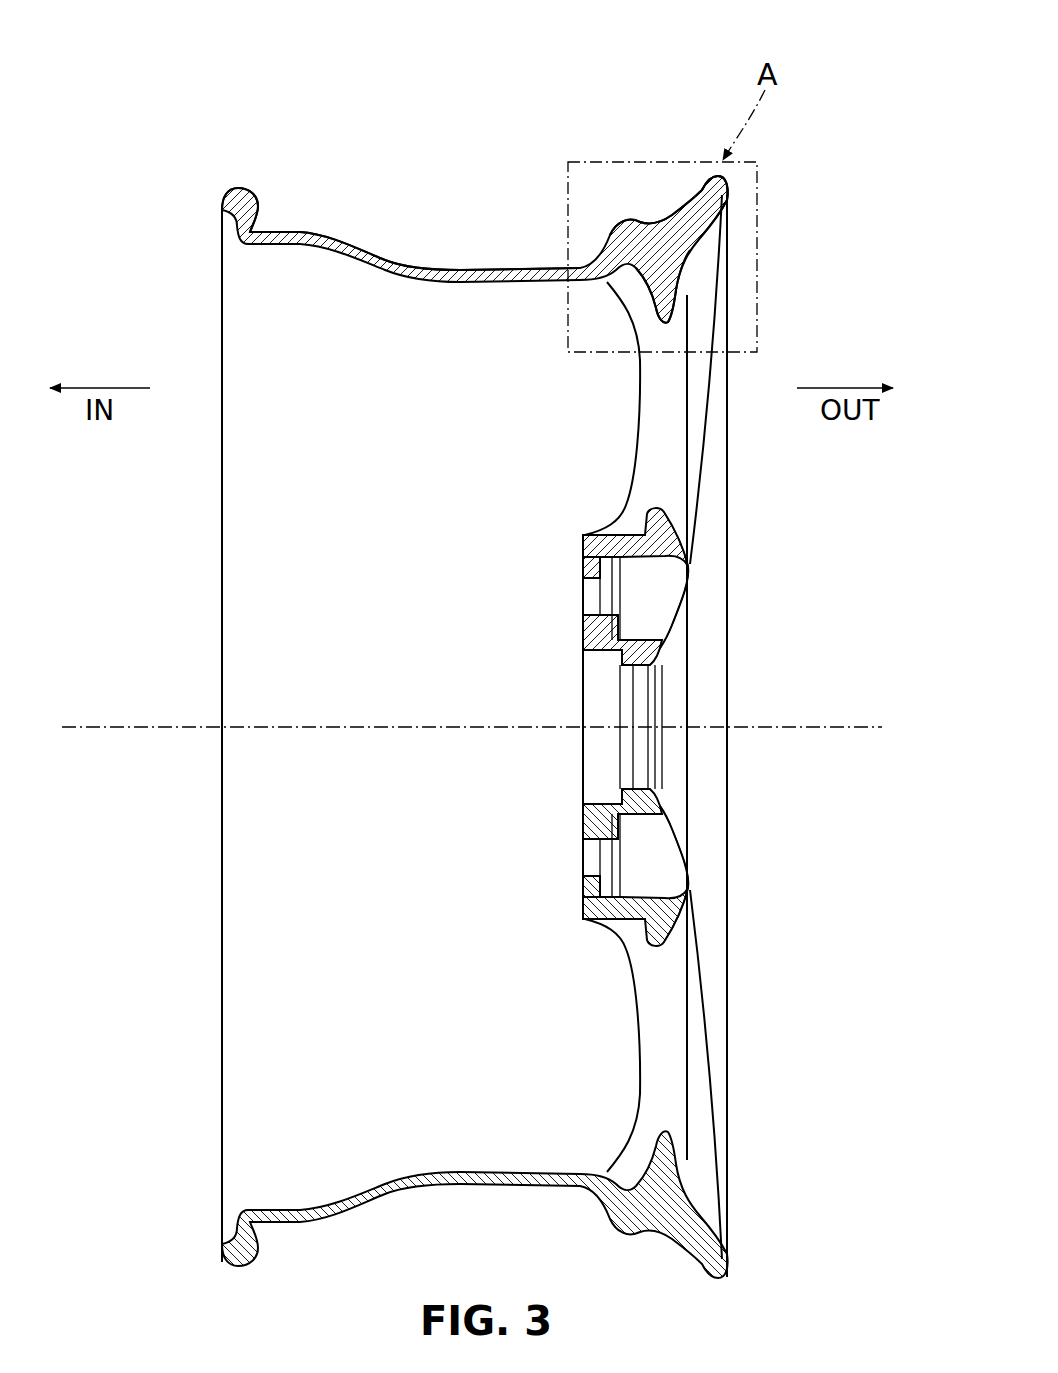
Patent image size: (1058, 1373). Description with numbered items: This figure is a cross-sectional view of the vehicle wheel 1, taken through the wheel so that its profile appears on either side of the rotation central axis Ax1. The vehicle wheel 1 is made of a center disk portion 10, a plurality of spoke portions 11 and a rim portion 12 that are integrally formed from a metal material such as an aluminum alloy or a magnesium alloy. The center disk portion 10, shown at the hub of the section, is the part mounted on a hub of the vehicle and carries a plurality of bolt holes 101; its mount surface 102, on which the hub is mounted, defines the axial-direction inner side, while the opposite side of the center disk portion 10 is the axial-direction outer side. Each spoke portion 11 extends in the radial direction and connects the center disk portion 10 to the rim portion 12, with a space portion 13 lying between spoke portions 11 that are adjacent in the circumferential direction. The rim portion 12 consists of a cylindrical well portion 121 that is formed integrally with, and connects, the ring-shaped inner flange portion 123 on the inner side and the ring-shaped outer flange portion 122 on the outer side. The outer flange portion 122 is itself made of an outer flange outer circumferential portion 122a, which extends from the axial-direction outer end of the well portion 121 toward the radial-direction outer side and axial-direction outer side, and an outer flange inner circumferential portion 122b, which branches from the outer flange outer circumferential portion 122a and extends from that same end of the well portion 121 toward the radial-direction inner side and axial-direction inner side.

The vehicle wheel 1 is at (212, 110).
The rim portion 12 is at (585, 84).
The well portion 121 is at (452, 264).
The outer flange portion 122 is at (714, 168).
The inner flange portion 123 is at (256, 184).
The outer flange outer circumferential portion 122a is at (720, 233).
The outer flange inner circumferential portion 122b is at (690, 289).
The spoke portion 11 is at (670, 371).
The space portion 13 is at (670, 451).
The center disk portion 10 is at (670, 791).
The bolt hole 101 is at (672, 583).
The mount surface 102 is at (574, 590).
The rotation central axis Ax1 is at (832, 722).